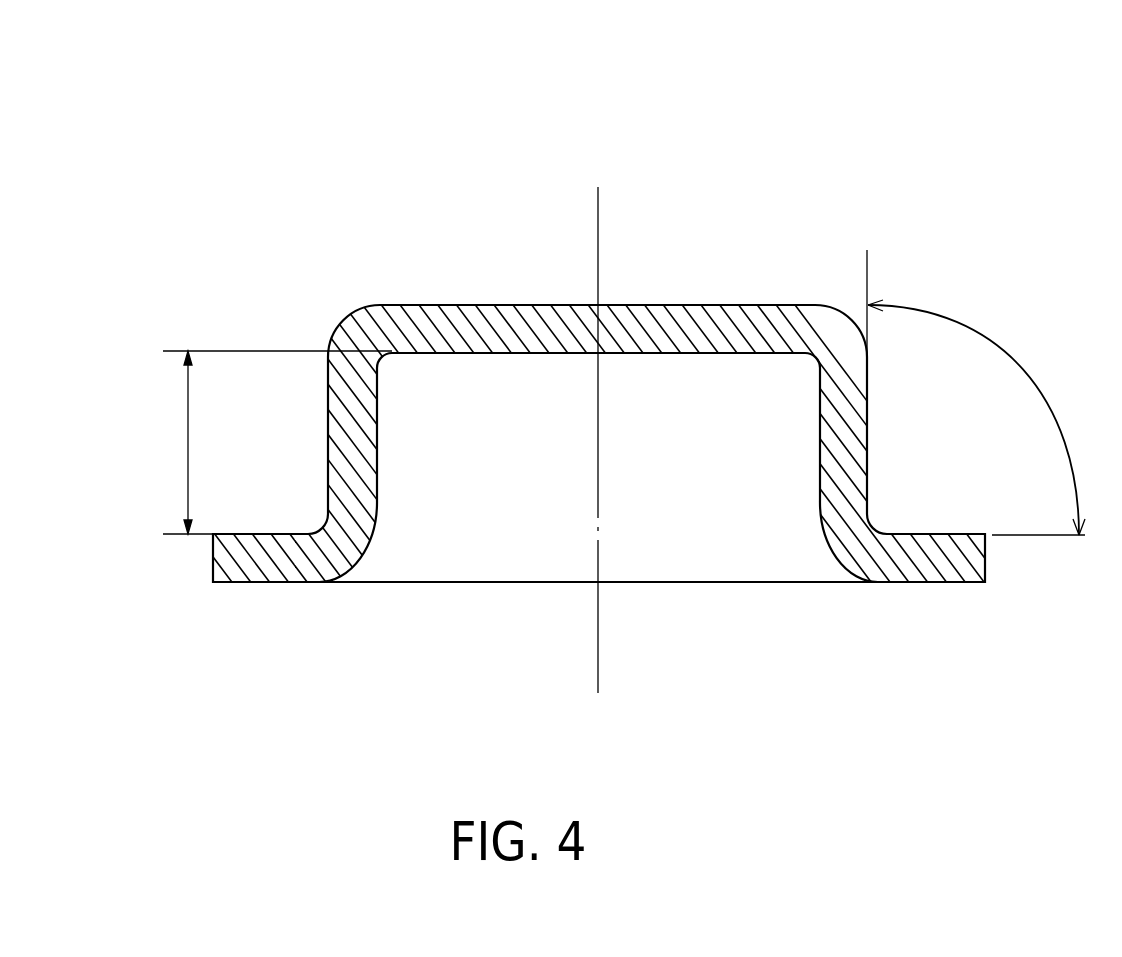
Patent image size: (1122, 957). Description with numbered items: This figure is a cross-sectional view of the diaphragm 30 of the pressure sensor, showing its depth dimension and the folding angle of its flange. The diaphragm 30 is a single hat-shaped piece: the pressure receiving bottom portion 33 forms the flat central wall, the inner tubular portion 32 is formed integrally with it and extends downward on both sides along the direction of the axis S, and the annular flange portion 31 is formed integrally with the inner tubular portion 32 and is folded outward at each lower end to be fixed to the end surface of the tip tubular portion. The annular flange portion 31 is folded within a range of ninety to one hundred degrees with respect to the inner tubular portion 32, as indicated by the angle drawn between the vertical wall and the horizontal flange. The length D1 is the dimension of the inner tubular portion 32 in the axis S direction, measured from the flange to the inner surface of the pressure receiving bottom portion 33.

The diaphragm 30 is at (775, 162).
The annular flange portion 31 is at (262, 570).
The inner tubular portion 32 is at (372, 457).
The pressure receiving bottom portion 33 is at (493, 313).
The axis S is at (598, 670).
The length of the inner tubular portion D1 is at (264, 442).